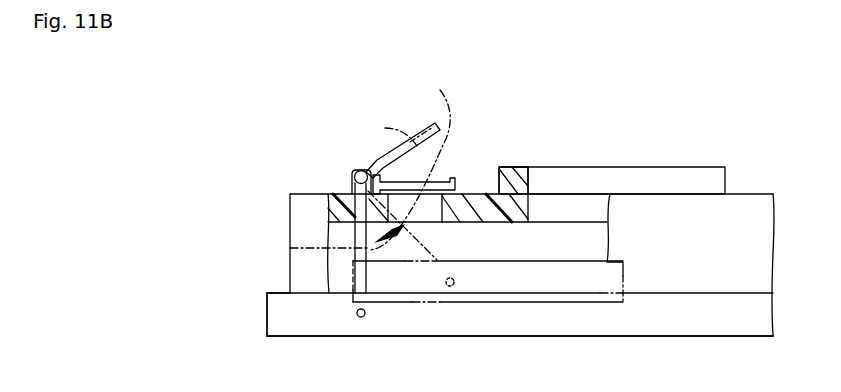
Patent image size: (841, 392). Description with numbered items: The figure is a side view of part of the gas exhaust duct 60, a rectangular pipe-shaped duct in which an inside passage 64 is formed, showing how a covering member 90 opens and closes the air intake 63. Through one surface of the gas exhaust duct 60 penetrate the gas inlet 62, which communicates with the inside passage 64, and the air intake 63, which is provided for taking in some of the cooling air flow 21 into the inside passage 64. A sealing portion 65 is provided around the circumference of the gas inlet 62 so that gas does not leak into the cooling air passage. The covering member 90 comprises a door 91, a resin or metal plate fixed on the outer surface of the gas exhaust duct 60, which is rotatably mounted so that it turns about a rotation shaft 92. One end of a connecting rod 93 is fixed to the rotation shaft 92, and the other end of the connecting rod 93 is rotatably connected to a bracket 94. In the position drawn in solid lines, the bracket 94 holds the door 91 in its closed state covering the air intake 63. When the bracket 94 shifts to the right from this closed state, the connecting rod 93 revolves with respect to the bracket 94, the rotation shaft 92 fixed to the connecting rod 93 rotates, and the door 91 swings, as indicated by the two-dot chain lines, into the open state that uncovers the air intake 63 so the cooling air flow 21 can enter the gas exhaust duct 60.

The cooling air flow 21 is at (446, 103).
The gas exhaust duct 60 is at (758, 194).
The gas inlet 62 is at (568, 208).
The air intake 63 is at (425, 208).
The inside passage 64 is at (337, 233).
The sealing portion 65 is at (510, 167).
The covering member 90 is at (352, 80).
The door 91 is at (397, 167).
The rotation shaft 92 is at (358, 170).
The connecting rod 93 is at (358, 230).
The bracket 94 is at (518, 302).